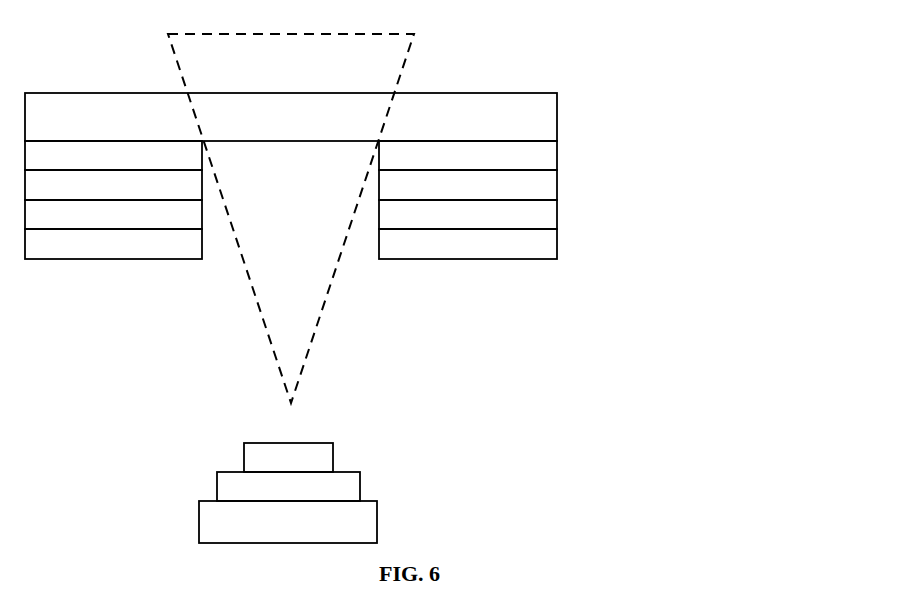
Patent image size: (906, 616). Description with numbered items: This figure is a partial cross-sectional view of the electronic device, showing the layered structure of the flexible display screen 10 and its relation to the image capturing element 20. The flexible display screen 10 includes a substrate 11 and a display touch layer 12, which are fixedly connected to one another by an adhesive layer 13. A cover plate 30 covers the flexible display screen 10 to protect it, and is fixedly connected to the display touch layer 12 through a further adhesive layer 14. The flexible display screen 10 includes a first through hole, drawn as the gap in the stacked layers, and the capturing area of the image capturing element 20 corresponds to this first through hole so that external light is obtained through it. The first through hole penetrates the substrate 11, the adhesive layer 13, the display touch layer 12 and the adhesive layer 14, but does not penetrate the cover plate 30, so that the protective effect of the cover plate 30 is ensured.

The flexible display screen 10 is at (700, 243).
The substrate 11 is at (528, 249).
The display touch layer 12 is at (528, 188).
The adhesive layer 13 is at (528, 220).
The adhesive layer 14 is at (528, 158).
The image capturing element 20 is at (384, 543).
The cover plate 30 is at (525, 117).